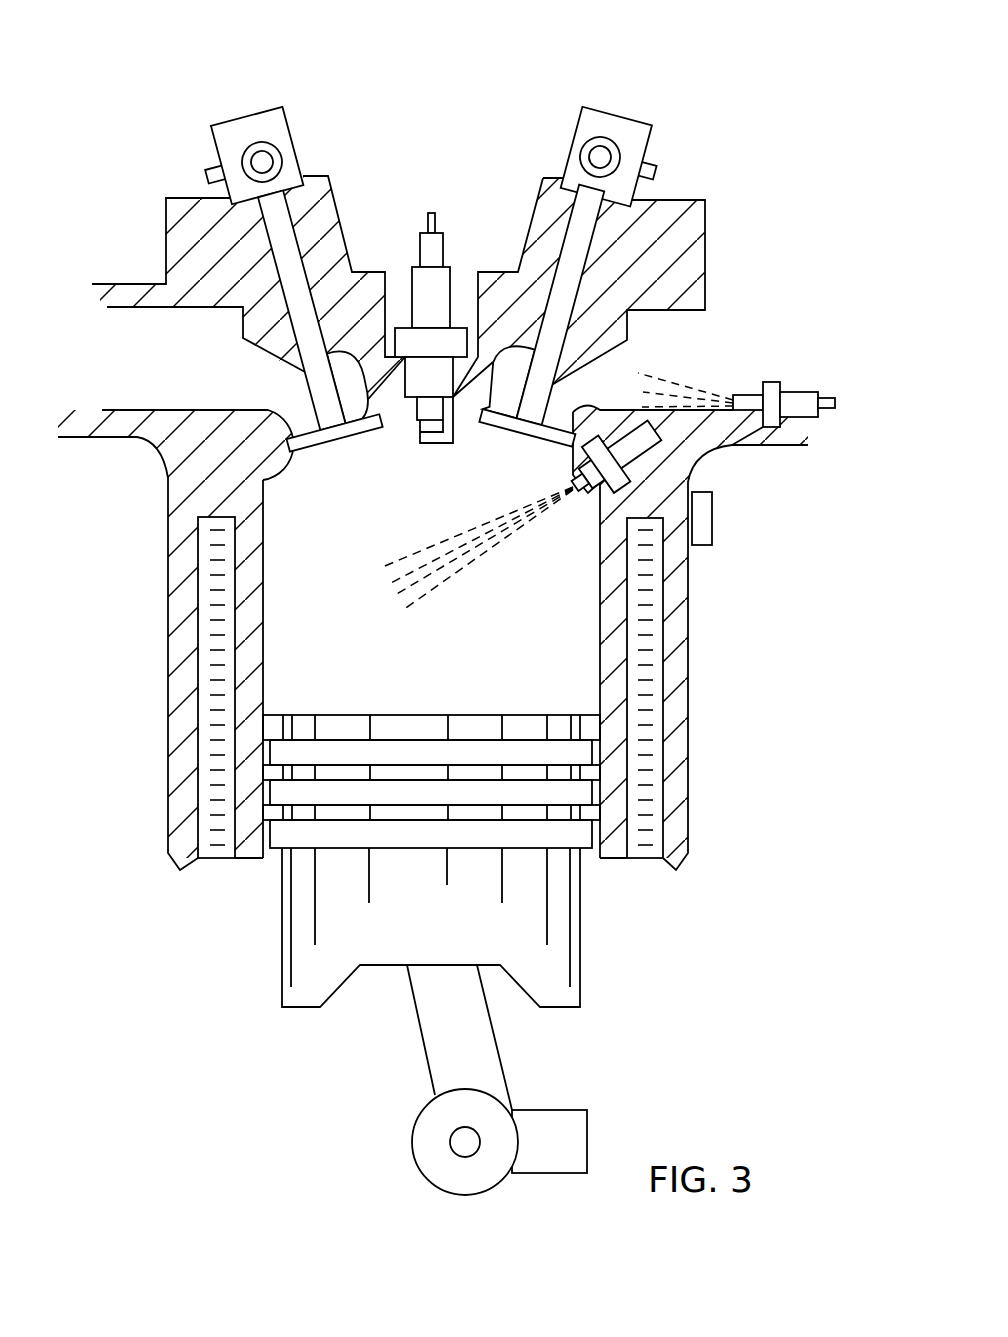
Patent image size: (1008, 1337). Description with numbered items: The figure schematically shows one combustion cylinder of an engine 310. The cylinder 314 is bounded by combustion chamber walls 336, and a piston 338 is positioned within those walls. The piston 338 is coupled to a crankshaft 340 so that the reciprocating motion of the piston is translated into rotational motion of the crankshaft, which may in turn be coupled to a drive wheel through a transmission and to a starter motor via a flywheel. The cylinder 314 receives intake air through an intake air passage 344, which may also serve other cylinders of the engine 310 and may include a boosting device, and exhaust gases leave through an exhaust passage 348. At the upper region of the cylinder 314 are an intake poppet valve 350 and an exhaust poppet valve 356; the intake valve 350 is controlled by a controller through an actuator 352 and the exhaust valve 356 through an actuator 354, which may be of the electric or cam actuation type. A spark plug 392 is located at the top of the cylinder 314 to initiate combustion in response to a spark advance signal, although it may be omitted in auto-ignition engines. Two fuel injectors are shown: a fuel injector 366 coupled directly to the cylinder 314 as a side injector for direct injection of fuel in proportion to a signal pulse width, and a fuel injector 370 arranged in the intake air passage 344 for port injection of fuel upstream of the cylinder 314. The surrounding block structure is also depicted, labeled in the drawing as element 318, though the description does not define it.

The engine 310 is at (730, 60).
The cylinder 314 is at (562, 676).
The cylinder block / walls 318 is at (212, 858).
The combustion chamber walls 336 is at (263, 582).
The piston 338 is at (300, 952).
The crankshaft 340 is at (413, 1162).
The intake air passage 344 is at (705, 359).
The exhaust passage 348 is at (115, 386).
The intake poppet valve 350 is at (543, 405).
The actuator 352 is at (612, 108).
The actuator 354 is at (258, 112).
The exhaust poppet valve 356 is at (321, 396).
The fuel injector 366 is at (650, 465).
The fuel injector 370 is at (771, 380).
The spark plug 392 is at (440, 253).